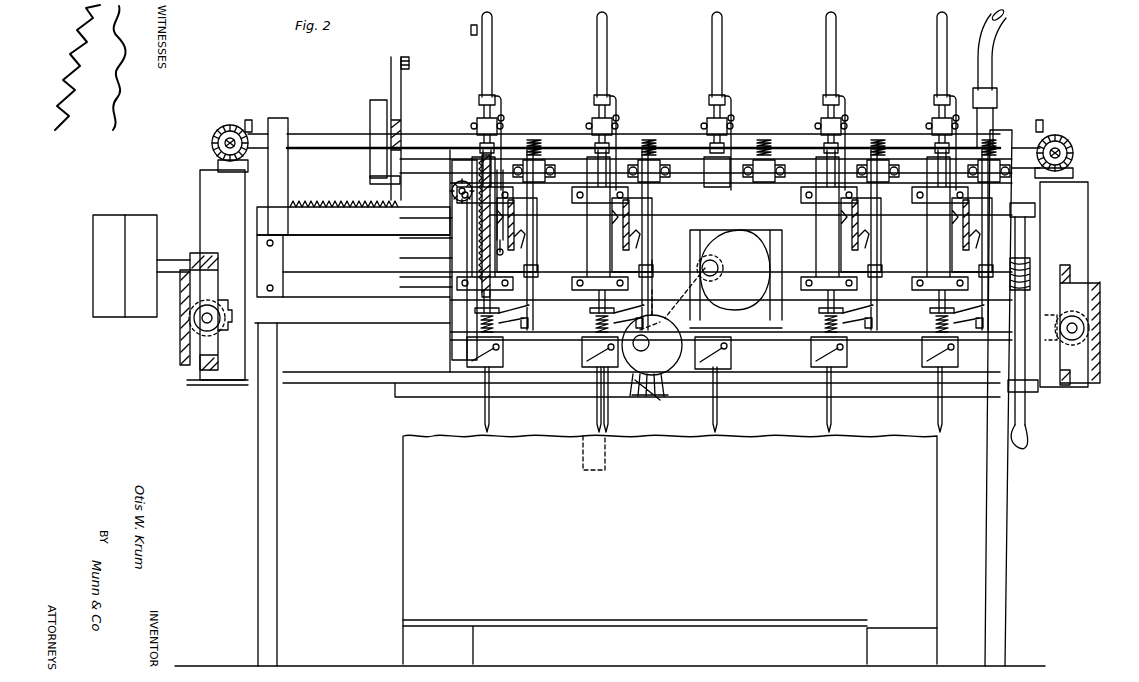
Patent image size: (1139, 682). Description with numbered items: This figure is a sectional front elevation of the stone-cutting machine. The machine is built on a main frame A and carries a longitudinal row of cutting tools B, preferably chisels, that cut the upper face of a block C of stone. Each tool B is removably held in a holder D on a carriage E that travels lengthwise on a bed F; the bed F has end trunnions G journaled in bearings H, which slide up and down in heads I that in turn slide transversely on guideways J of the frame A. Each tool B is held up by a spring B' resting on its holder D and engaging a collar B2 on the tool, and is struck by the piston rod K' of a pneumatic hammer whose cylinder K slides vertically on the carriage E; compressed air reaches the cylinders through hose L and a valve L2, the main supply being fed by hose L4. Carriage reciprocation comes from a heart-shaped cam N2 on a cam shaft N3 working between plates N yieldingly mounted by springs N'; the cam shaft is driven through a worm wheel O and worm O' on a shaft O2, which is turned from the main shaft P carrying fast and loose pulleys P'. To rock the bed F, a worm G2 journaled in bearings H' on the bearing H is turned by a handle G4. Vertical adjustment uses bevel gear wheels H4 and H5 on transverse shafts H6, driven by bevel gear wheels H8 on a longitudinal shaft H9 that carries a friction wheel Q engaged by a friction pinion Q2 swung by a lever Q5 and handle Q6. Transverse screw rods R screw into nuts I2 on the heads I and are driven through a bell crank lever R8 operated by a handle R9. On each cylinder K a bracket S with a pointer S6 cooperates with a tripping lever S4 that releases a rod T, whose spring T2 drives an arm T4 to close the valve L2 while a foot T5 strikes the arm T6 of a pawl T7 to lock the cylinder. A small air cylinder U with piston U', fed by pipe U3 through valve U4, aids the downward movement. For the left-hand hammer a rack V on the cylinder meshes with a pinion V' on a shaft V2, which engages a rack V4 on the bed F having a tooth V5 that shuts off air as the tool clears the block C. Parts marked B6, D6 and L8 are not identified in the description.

The main frame A is at (263, 485).
The cutting tools B is at (702, 399).
The spring B' is at (627, 339).
The collar B2 is at (476, 307).
The needle holder B6 is at (913, 353).
The block C is at (670, 549).
The holders D is at (467, 354).
The clamp lever D6 is at (500, 355).
The carriage E is at (450, 295).
The bed F is at (372, 322).
The trunnions G is at (1025, 358).
The worm G2 is at (1030, 266).
The handle G4 is at (1027, 432).
The bearings H is at (1026, 173).
The bearings H' is at (1038, 306).
The bevel gear wheels H4 is at (218, 162).
The bevel gear wheels H5 is at (234, 126).
The shafts H6 is at (216, 133).
The bevel gear wheels H8 is at (252, 120).
The shaft H9 is at (348, 138).
The heads I is at (200, 210).
The nuts I2 is at (180, 342).
The guideways J is at (177, 325).
The cylinders K is at (712, 231).
The piston rod K' is at (758, 247).
The hose L is at (492, 18).
The valve L2 is at (706, 122).
The hose L4 is at (992, 52).
The rod head L8 is at (475, 120).
The plates N is at (735, 272).
The springs N' is at (738, 282).
The heart-shaped cam N2 is at (744, 295).
The cam shaft N3 is at (722, 268).
The worm wheel O is at (663, 321).
The worm O' is at (649, 393).
The shaft O2 is at (409, 380).
The main shaft P is at (304, 270).
The fast and loose pulleys P' is at (125, 256).
The friction wheel Q is at (385, 133).
The friction pinion Q2 is at (370, 200).
The lever Q5 is at (402, 112).
The handle Q6 is at (409, 62).
The screw rods R is at (207, 310).
The bell crank lever R8 is at (480, 70).
The handle R9 is at (473, 24).
The bracket S is at (988, 236).
The tripping lever S4 is at (518, 250).
The pointer S6 is at (504, 215).
The rod T is at (535, 290).
The spring T2 is at (660, 150).
The arm T4 is at (528, 140).
The foot T5 is at (872, 322).
The arm T6 is at (744, 307).
The pawl T7 is at (868, 296).
The air cylinder U is at (740, 139).
The piston U' is at (463, 212).
The pressure supply pipe U3 is at (503, 98).
The valve U4 is at (502, 118).
The rack V is at (454, 226).
The pinion V' is at (454, 259).
The shaft V2 is at (448, 204).
The rack V4 is at (326, 204).
The tooth V5 is at (448, 185).